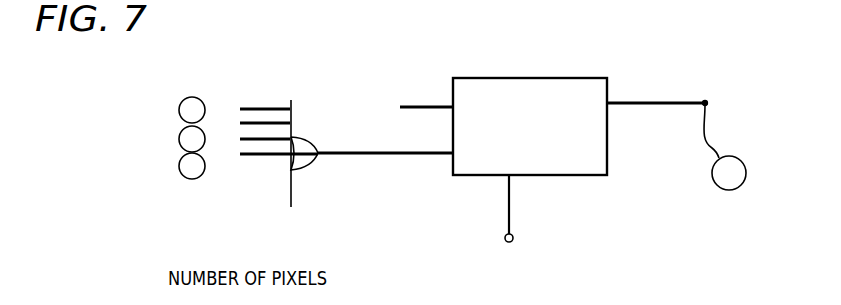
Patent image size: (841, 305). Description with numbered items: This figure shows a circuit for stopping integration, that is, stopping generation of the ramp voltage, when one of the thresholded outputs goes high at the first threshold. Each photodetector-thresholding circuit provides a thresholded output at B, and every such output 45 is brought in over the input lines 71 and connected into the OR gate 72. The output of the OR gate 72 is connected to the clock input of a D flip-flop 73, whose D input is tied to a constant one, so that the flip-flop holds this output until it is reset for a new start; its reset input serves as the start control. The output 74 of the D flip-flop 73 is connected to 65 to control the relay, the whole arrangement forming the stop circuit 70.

The thresholded output 45 is at (196, 80).
The input lines 71 is at (258, 109).
The OR gate 72 is at (292, 183).
The D flip-flop 73 is at (527, 78).
The output 74 is at (610, 103).
The relay control connection 65 is at (705, 103).
The pixel counting circuit 70 is at (681, 236).